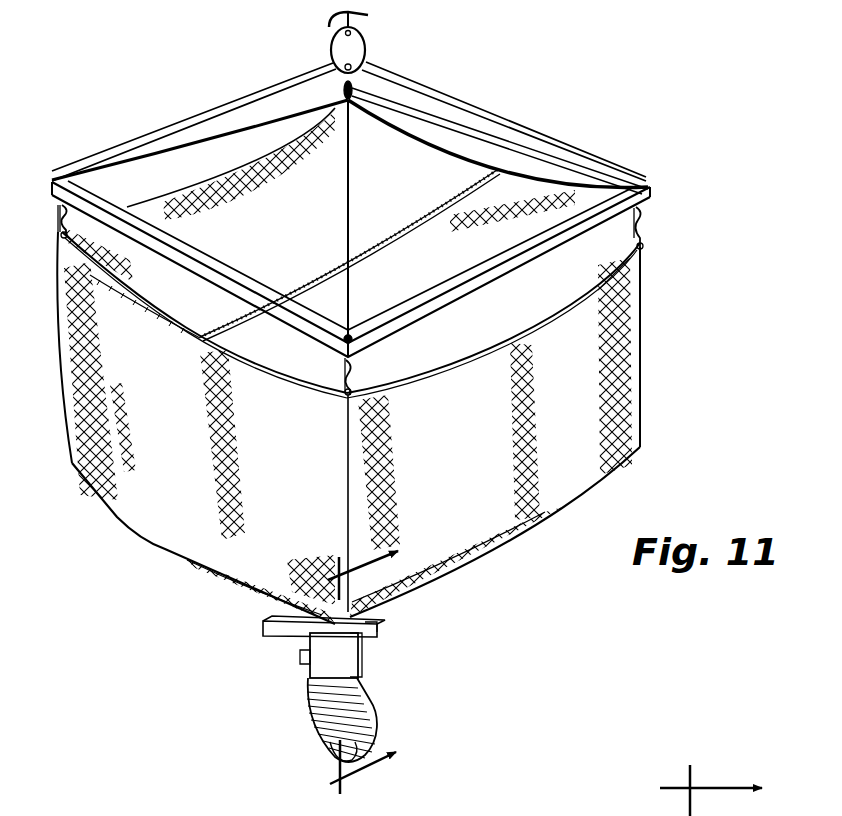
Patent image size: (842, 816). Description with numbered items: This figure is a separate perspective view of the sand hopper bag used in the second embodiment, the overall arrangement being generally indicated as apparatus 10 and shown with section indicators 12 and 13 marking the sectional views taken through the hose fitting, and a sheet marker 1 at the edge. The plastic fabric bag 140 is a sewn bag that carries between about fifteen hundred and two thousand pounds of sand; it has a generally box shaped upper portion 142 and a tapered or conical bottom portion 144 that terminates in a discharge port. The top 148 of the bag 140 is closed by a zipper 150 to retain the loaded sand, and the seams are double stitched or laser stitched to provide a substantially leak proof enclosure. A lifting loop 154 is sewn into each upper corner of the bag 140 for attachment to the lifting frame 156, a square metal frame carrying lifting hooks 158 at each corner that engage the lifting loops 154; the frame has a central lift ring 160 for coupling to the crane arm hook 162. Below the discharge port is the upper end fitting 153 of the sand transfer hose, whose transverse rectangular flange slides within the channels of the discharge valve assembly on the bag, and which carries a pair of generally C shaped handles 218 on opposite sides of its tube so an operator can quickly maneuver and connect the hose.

The apparatus 10 is at (826, 140).
The plastic fabric bag 140 is at (648, 358).
The box shaped upper portion 142 is at (594, 415).
The tapered or conical bottom portion 144 is at (427, 590).
The top of the bag 148 is at (320, 247).
The zipper 150 is at (480, 190).
The upper end fitting 153 is at (263, 642).
The lifting loop 154 is at (643, 242).
The lifting frame 156 is at (497, 115).
The lifting hooks 158 is at (641, 214).
The central lift ring 160 is at (450, 107).
The crane arm hook 162 is at (396, 68).
The "C" shaped handles 218 is at (363, 653).
The section line 12- 12 is at (383, 664).
The section line 13- 13 is at (711, 782).
The sheet marker 1 is at (837, 806).